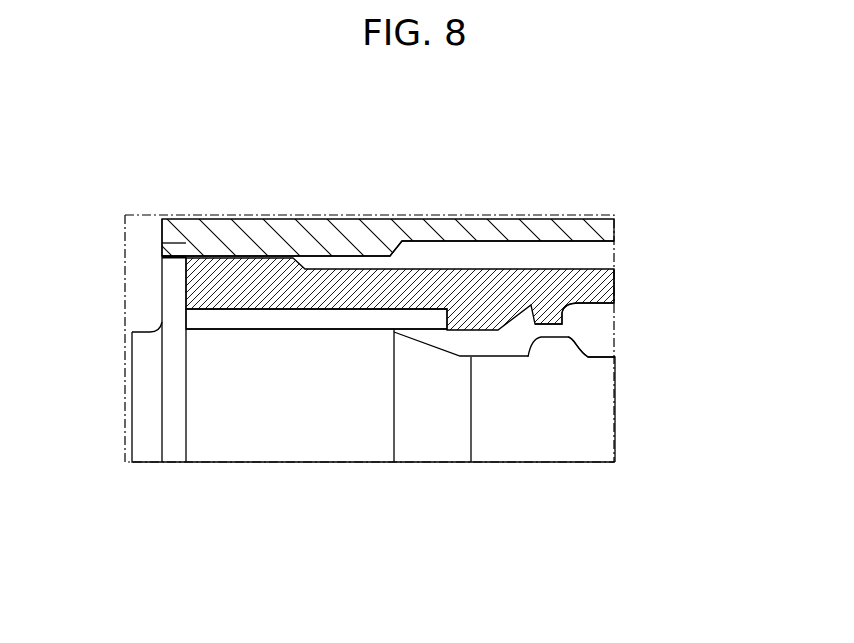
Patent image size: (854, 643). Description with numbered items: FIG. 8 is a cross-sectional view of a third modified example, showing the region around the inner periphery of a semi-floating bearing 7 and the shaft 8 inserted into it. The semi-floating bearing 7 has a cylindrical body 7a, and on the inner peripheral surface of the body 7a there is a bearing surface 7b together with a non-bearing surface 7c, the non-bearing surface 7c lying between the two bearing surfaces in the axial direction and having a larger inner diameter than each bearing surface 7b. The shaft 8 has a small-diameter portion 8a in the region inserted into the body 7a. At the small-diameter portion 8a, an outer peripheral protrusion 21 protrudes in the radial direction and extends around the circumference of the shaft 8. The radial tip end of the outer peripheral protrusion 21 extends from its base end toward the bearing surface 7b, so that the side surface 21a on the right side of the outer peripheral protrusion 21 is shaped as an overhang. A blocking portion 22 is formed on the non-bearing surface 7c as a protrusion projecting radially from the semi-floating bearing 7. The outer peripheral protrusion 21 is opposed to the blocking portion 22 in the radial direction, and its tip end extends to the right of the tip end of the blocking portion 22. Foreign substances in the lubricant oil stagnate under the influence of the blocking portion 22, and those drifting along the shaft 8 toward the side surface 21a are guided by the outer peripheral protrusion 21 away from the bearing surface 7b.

The semi-floating bearing 7 is at (416, 338).
The body 7a is at (388, 248).
The bearing surface 7b is at (292, 330).
The non-bearing surface 7c is at (595, 304).
The shaft 8 is at (132, 399).
The small-diameter portion 8a is at (497, 355).
The outer peripheral protrusion 21 is at (528, 357).
The side surface 21a is at (589, 360).
The blocking portion 22 is at (578, 304).